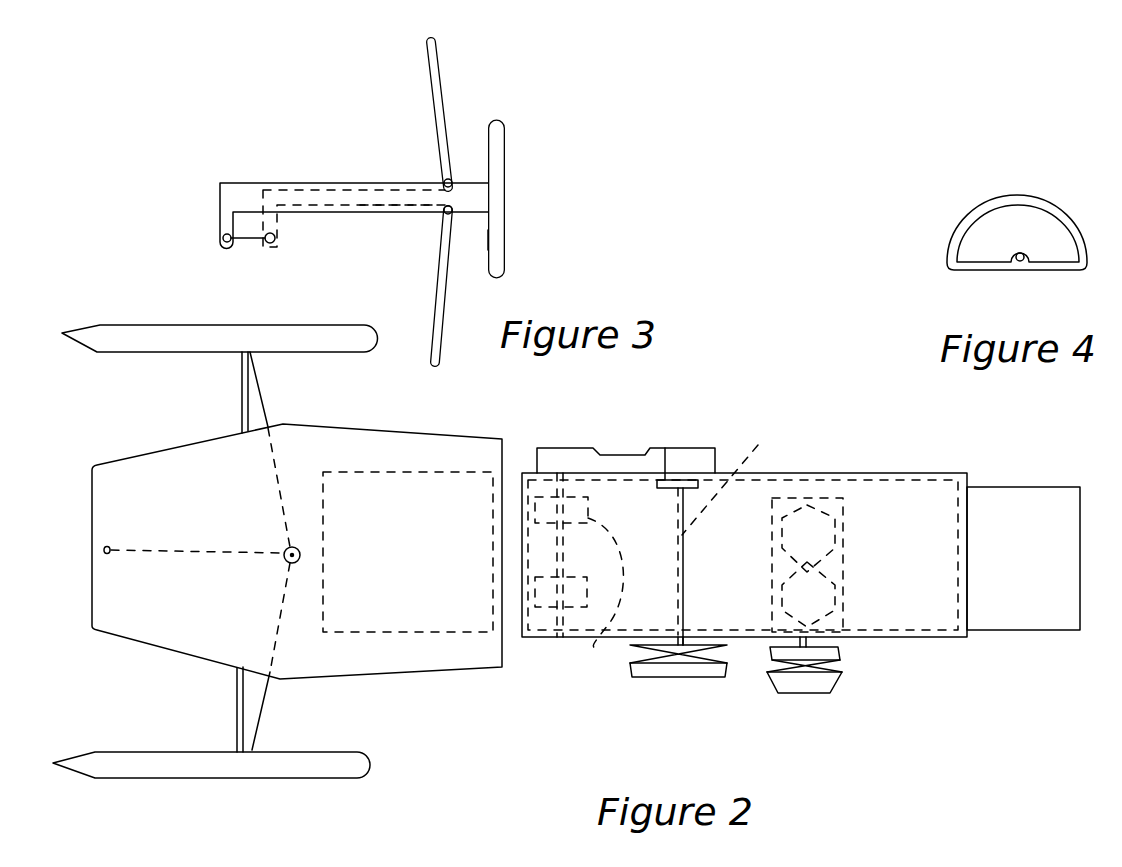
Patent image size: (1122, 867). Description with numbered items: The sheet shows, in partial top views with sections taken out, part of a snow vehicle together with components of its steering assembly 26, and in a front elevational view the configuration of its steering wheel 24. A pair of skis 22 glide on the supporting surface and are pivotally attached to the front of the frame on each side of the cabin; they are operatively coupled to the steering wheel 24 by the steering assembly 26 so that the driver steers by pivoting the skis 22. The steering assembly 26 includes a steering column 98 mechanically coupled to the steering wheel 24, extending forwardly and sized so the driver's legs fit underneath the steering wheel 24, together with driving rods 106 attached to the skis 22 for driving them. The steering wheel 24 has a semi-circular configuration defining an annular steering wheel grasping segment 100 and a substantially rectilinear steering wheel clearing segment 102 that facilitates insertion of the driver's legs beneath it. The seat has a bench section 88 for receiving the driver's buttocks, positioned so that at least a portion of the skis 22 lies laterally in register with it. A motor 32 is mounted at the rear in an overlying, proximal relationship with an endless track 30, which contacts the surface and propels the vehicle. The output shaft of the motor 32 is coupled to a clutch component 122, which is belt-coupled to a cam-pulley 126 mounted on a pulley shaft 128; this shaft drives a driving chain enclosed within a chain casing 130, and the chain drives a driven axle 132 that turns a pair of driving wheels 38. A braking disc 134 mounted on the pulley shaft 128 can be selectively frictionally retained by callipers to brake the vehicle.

In FIG. 2, the skis 22 is at (178, 340).
In FIG. 3, the steering wheel 24 is at (503, 157).
In FIG. 4, the steering wheel 24 is at (920, 247).
In FIG. 3, the steering assembly 26 is at (299, 139).
In FIG. 2, the endless track 30 is at (1037, 623).
In FIG. 2, the motor 32 is at (860, 482).
In FIG. 2, the driving wheels 38 is at (594, 652).
In FIG. 2, the bench section 88 is at (444, 476).
In FIG. 3, the steering column 98 is at (367, 207).
In FIG. 3, the steering wheel grasping segment 100 is at (500, 238).
In FIG. 4, the steering wheel grasping segment 100 is at (1022, 200).
In FIG. 4, the steering wheel clearing segment 102 is at (983, 267).
In FIG. 3, the driving rods 106 is at (447, 98).
In FIG. 2, the driving rods 106 is at (263, 398).
In FIG. 2, the clutch component 122 is at (817, 682).
In FIG. 2, the cam-pulley 126 is at (672, 670).
In FIG. 2, the pulley shaft 128 is at (752, 469).
In FIG. 2, the chain casing 130 is at (680, 460).
In FIG. 2, the driven axle 132 is at (542, 655).
In FIG. 2, the braking disc 134 is at (663, 480).